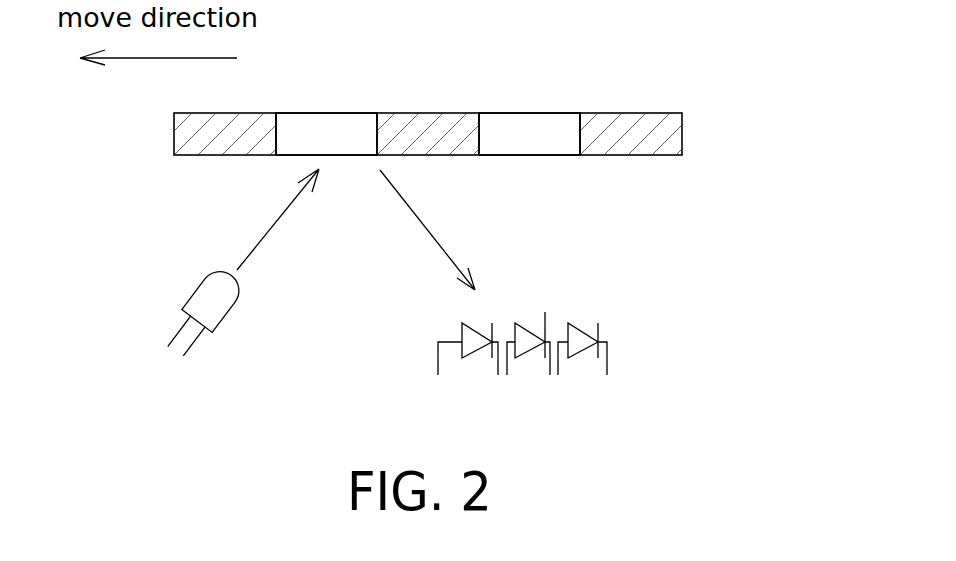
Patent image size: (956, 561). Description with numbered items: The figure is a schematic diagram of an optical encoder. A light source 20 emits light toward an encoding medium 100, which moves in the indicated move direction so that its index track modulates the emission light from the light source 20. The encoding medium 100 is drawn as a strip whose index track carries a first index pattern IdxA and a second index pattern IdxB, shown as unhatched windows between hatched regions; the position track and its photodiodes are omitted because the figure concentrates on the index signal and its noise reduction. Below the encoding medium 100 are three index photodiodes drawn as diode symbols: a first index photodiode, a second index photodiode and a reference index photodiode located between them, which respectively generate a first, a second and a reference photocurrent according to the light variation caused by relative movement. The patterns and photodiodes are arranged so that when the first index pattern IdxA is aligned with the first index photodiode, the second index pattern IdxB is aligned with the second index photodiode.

The encoding medium 100 is at (676, 131).
The light source 20 is at (240, 302).
The first index pattern IdxA is at (520, 127).
The second index pattern IdxB is at (308, 127).